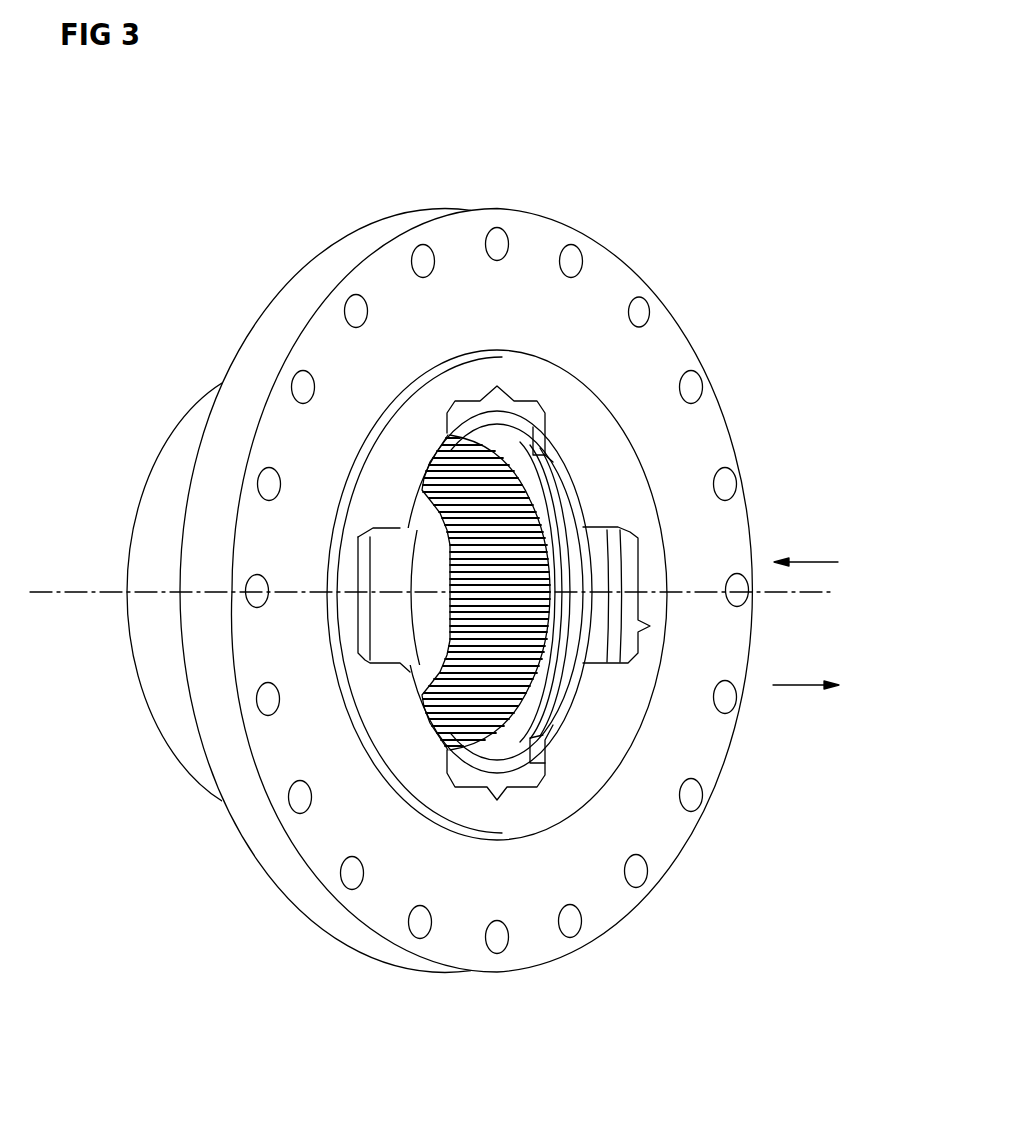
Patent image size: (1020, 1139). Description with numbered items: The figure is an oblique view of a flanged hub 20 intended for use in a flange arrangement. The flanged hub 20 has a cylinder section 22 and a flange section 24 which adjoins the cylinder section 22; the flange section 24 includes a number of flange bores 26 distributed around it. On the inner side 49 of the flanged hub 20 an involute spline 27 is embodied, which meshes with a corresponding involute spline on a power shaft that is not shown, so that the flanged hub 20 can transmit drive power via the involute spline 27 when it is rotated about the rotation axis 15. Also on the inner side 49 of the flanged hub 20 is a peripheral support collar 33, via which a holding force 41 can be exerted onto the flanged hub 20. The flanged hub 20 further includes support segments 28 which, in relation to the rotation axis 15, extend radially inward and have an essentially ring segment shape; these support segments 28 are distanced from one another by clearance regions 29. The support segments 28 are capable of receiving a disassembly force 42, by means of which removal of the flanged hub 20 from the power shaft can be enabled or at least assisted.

The rotation axis 15 is at (38, 590).
The flanged hub 20 is at (230, 257).
The cylinder section 22 is at (157, 475).
The flange section 24 is at (683, 314).
The flange bores 26 is at (640, 306).
The involute spline 27 is at (527, 513).
The support segments 28 is at (547, 707).
The clearance regions 29 is at (497, 386).
The peripheral support collar 33 is at (547, 717).
The holding force 41 is at (802, 558).
The disassembly force 42 is at (808, 689).
The inner side 49 is at (552, 528).